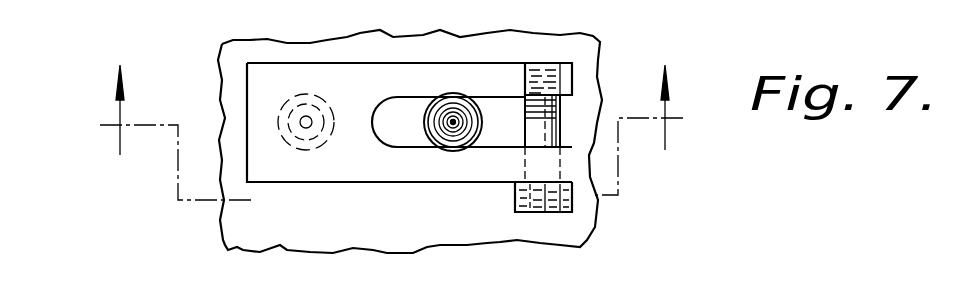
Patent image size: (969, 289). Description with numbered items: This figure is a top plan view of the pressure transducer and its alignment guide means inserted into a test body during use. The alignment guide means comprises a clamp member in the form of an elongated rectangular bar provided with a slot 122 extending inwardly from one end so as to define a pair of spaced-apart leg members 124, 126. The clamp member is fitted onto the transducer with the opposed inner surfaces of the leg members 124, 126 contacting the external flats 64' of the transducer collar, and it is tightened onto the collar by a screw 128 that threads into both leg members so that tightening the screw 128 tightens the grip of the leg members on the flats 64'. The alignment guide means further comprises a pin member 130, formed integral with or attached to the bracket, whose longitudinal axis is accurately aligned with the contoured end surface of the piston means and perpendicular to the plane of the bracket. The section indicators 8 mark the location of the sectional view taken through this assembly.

The section line 8- 8 is at (386, 132).
The slot 122 is at (416, 145).
The leg member 124 is at (495, 72).
The leg member 126 is at (487, 170).
The screw 128 is at (558, 127).
The pin member 130 is at (300, 93).
The external flats 64' is at (429, 118).